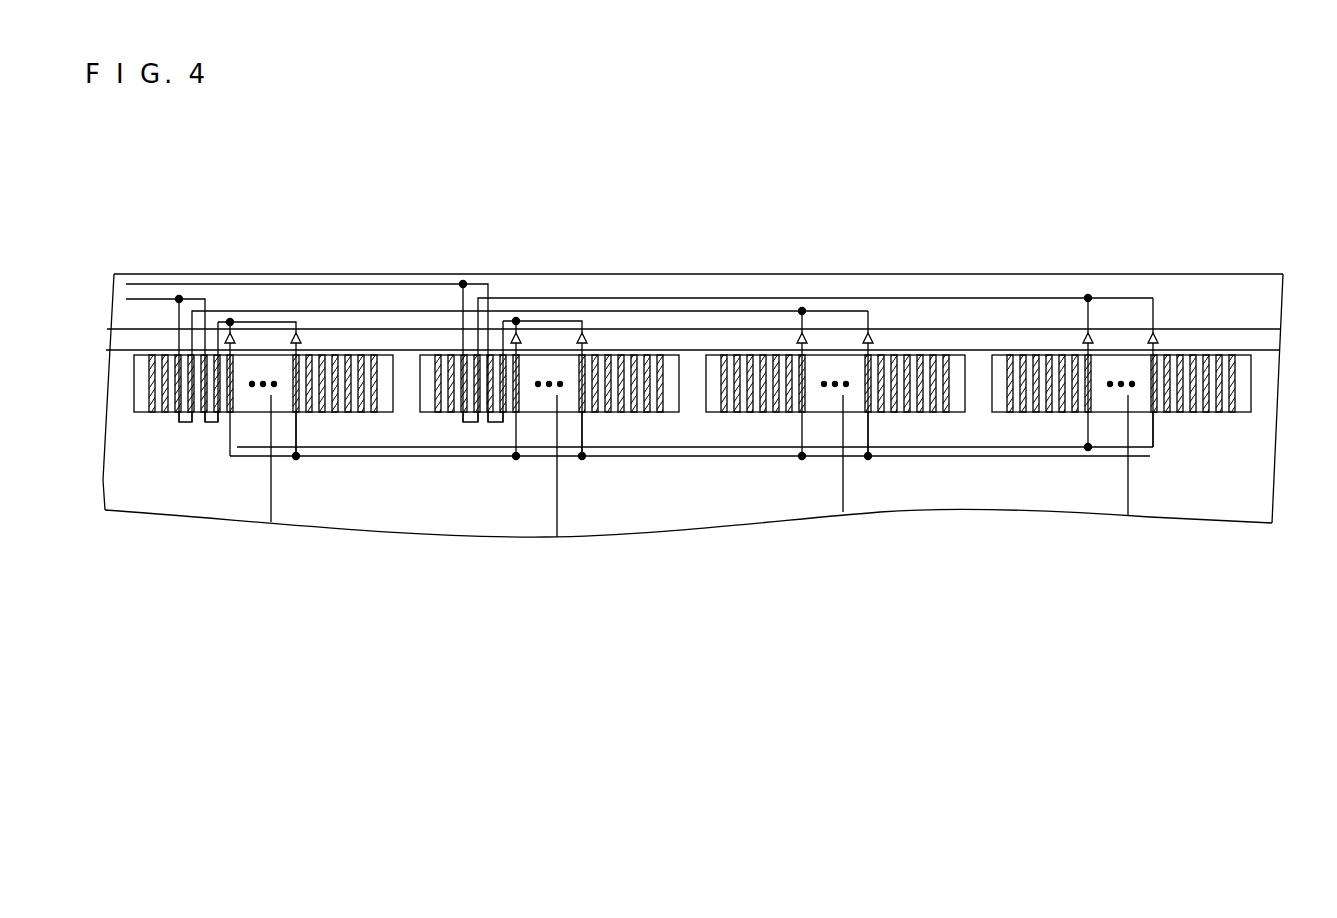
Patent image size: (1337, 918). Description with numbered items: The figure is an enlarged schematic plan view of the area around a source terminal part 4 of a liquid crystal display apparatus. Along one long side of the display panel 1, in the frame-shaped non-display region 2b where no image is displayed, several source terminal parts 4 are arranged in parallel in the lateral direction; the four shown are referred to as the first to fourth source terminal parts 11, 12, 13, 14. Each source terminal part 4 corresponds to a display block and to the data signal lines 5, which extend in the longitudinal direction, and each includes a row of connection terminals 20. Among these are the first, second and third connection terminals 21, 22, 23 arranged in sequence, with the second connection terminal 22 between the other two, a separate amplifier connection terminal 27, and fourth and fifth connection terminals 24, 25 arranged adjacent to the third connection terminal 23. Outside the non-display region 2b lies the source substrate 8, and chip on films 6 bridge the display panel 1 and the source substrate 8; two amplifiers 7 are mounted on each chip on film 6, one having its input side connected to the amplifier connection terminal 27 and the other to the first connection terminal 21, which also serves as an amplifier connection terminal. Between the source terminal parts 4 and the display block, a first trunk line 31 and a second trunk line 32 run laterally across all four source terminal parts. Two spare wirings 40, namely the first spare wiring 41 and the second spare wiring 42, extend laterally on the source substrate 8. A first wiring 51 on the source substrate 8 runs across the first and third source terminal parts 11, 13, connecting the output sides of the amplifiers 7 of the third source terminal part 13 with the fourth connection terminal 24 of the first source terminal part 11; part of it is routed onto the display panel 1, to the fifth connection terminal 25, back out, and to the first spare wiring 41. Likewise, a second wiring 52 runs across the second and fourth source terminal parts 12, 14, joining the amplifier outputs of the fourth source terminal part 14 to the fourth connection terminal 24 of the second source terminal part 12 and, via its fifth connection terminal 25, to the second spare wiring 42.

The display panel 1 is at (1265, 482).
The non-display region 2b is at (1206, 488).
The source terminal part 4 is at (1256, 420).
The data signal line 5 is at (270, 507).
The chip on film 6 is at (1262, 340).
The amplifier 7 is at (231, 333).
The source substrate 8 is at (1263, 300).
The first source terminal part 11 is at (263, 368).
The second source terminal part 12 is at (549, 368).
The third source terminal part 13 is at (835, 368).
The fourth source terminal part 14 is at (1121, 368).
The connection terminal 20 is at (337, 421).
The first connection terminal 21 is at (243, 362).
The second connection terminal 22 is at (215, 356).
The third connection terminal 23 is at (197, 414).
The fourth connection terminal 24 is at (201, 356).
The fifth connection terminal 25 is at (173, 414).
The amplifier connection terminal 27 is at (298, 413).
The first trunk line 31 is at (612, 449).
The second trunk line 32 is at (633, 458).
The spare wiring 40 is at (388, 282).
The first spare wiring 41 is at (160, 298).
The second spare wiring 42 is at (140, 284).
The first wiring 51 is at (331, 311).
The second wiring 52 is at (953, 298).